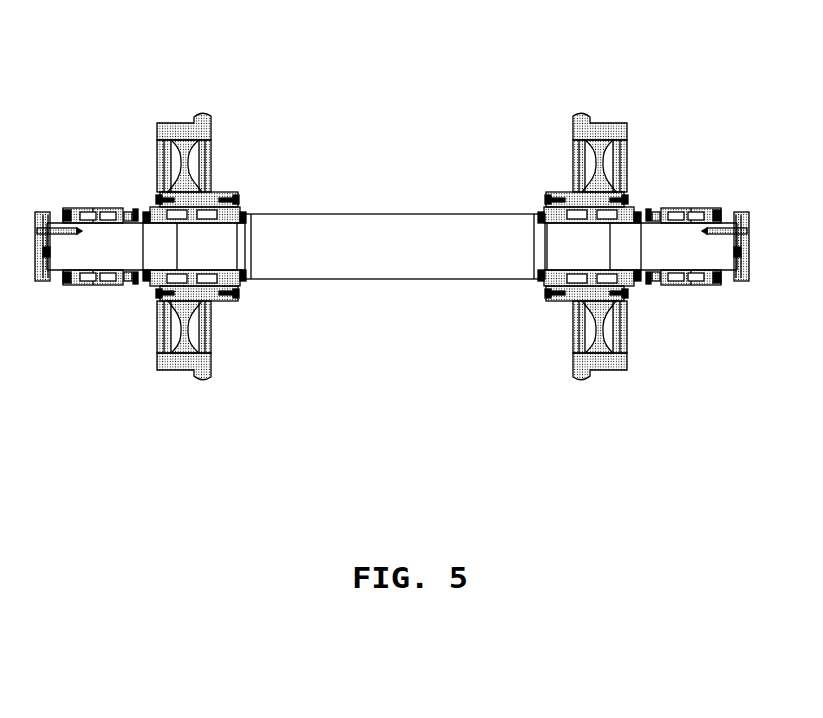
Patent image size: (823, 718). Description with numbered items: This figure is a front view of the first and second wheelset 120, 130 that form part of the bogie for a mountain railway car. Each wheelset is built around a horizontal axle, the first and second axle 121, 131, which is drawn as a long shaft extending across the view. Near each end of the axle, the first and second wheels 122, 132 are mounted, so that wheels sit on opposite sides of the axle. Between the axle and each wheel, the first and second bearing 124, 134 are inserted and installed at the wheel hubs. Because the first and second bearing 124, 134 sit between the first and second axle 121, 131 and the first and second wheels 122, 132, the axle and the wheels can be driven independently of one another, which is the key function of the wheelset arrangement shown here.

The first wheelset 120 is at (392, 237).
The second wheelset 130 is at (392, 237).
The first axle 121 is at (392, 333).
The second axle 131 is at (458, 267).
The first wheels 122 is at (381, 190).
The second wheels 132 is at (182, 128).
The first bearing 124 is at (392, 340).
The second bearing 134 is at (200, 270).